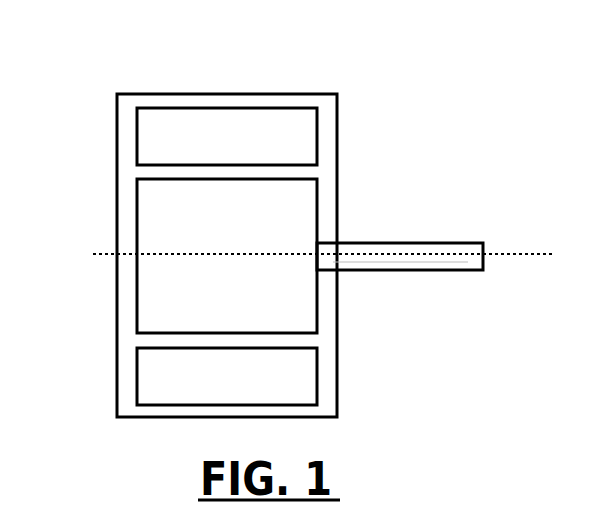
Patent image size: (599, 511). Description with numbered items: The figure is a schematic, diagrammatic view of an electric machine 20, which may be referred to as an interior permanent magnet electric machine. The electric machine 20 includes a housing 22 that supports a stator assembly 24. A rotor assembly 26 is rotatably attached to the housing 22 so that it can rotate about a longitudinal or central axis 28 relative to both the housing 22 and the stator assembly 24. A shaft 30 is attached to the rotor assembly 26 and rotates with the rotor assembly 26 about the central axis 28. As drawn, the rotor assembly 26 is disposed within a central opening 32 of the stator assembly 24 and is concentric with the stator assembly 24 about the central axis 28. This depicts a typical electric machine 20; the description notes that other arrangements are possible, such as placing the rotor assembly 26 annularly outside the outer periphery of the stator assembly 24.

The electric machine 20 is at (364, 73).
The housing 22 is at (117, 135).
The stator assembly 24 is at (321, 135).
The rotor assembly 26 is at (321, 310).
The central axis 28 is at (513, 254).
The shaft 30 is at (412, 243).
The central opening 32 is at (127, 232).